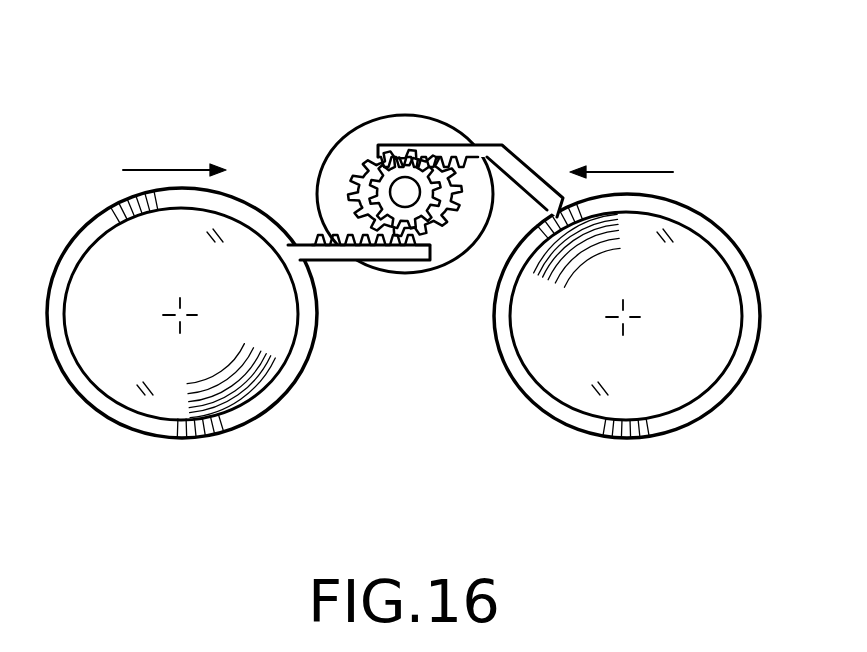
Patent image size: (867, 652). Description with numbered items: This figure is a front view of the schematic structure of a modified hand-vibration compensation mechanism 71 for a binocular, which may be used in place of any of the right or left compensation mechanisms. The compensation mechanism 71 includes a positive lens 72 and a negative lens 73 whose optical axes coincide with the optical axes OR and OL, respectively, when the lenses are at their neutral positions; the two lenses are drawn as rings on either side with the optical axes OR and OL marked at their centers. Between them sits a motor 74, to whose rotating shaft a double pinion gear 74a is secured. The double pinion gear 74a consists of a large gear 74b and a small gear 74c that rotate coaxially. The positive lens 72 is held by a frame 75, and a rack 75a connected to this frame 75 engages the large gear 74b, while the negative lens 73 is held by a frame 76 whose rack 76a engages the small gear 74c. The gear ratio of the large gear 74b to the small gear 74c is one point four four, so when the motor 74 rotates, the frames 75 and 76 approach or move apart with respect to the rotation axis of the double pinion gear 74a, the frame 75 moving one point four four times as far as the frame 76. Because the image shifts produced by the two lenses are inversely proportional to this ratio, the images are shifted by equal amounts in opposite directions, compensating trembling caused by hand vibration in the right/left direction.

The compensation mechanism 71 is at (180, 112).
The positive lens 72 is at (185, 372).
The negative lens 73 is at (626, 372).
The motor 74 is at (313, 180).
The double pinion gear 74a is at (350, 118).
The large gear 74b is at (332, 202).
The small gear 74c is at (390, 143).
The frame 75 is at (235, 247).
The rack 75a is at (394, 252).
The frame 76 is at (572, 146).
The rack 76a is at (480, 144).
The optical axis OR is at (178, 313).
The optical axis OL is at (624, 320).